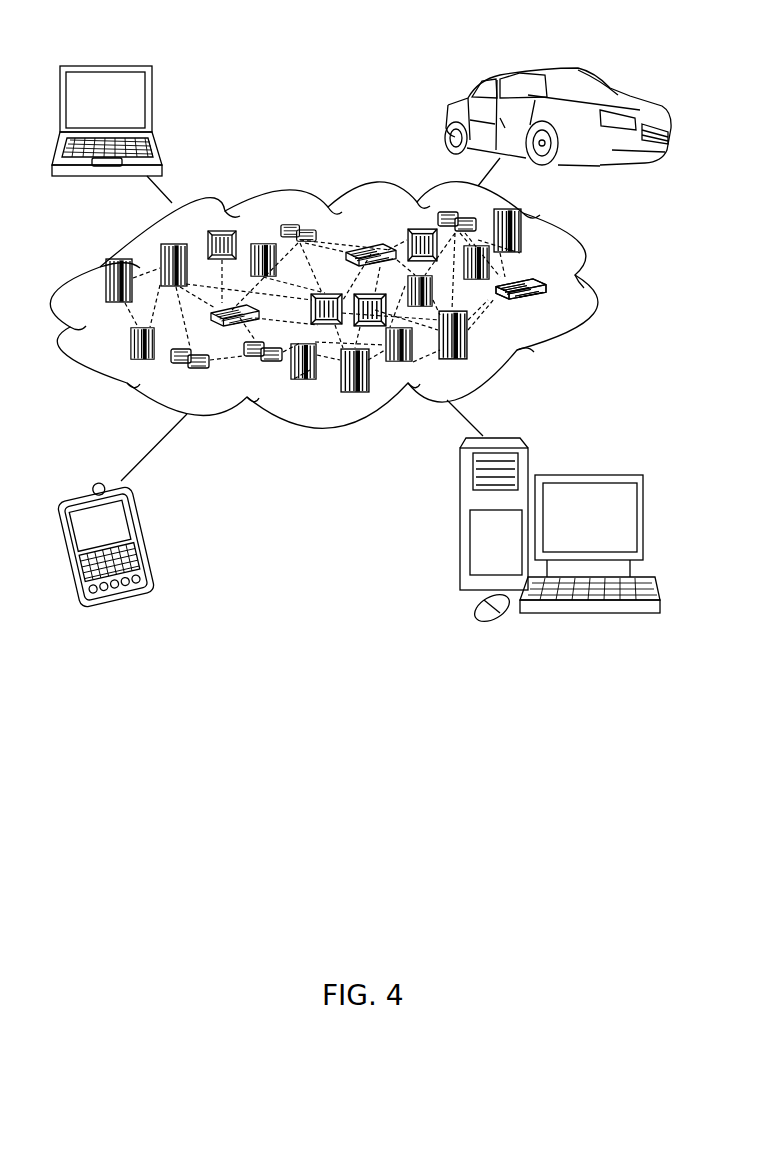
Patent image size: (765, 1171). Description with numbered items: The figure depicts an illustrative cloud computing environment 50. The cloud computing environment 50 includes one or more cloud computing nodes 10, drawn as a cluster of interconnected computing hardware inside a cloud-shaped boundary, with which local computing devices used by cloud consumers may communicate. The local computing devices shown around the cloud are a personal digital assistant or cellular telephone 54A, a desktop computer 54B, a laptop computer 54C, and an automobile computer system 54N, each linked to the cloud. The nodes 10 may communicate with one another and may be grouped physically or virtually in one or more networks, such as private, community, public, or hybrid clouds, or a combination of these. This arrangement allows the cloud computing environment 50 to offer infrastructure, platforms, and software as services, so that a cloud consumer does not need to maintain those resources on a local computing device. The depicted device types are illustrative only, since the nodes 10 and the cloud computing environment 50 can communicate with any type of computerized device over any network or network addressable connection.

The cloud computing node 10 is at (553, 309).
The cloud computing environment 50 is at (586, 290).
The personal digital assistant or cellular telephone 54A is at (145, 537).
The desktop computer 54B is at (587, 475).
The laptop computer 54C is at (156, 105).
The automobile computer system 54N is at (442, 119).